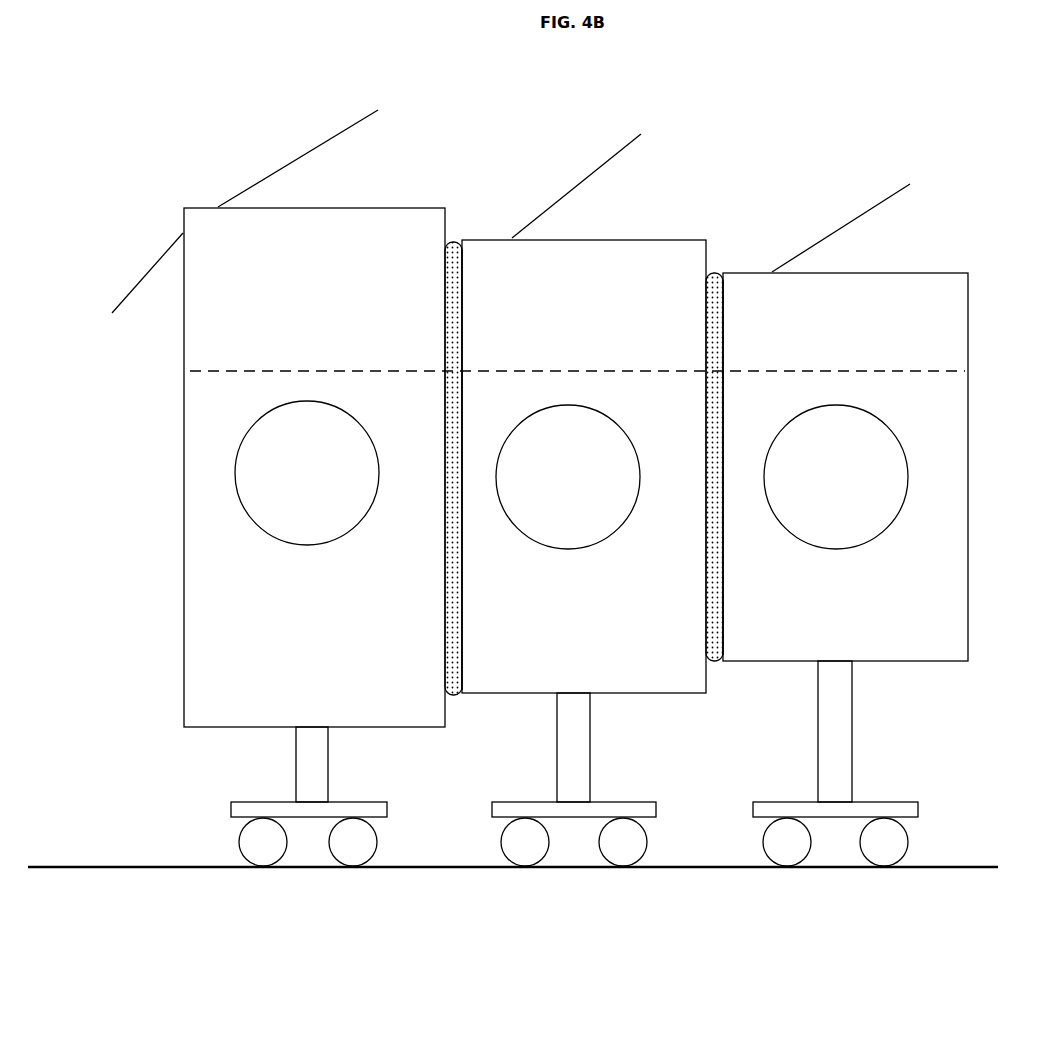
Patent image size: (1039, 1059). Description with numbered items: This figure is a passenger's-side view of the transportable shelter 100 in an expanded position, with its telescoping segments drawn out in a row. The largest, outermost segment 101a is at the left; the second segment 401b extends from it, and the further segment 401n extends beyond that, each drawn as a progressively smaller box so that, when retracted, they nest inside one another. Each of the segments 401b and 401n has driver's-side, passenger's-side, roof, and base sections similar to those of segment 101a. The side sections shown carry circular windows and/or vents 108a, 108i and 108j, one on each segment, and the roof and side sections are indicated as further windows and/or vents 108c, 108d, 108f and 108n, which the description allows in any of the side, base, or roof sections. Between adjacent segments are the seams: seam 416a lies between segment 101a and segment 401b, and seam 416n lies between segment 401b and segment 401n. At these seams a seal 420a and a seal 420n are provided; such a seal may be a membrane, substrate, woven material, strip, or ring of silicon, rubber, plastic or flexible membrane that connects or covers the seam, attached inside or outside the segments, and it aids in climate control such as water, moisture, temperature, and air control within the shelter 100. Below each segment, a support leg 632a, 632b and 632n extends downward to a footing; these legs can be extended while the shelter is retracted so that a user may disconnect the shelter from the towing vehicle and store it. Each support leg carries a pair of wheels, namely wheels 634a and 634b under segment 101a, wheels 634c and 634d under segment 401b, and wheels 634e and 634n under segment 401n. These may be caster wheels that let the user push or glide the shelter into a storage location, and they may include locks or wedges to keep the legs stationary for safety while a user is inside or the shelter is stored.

The transportable shelter 100 is at (205, 157).
The segment 101a is at (314, 458).
The segment 401b is at (584, 458).
The segment 401n is at (845, 456).
The window and/or vent 108a is at (307, 473).
The window and/or vent 108i is at (568, 477).
The window and/or vent 108j is at (836, 477).
The window and/or vent 108c is at (380, 207).
The window and/or vent 108d is at (624, 238).
The window and/or vent 108f is at (902, 272).
The window and/or vent 108n is at (183, 313).
The seam 416a is at (450, 268).
The seam 416n is at (710, 303).
The seal 420a is at (475, 313).
The seal 420n is at (735, 332).
The support leg 632a is at (342, 784).
The support leg 632b is at (607, 784).
The support leg 632n is at (867, 784).
The wheel 634a is at (263, 856).
The wheel 634b is at (353, 856).
The wheel 634c is at (525, 856).
The wheel 634d is at (623, 856).
The wheel 634e is at (787, 856).
The wheel 634n is at (884, 856).